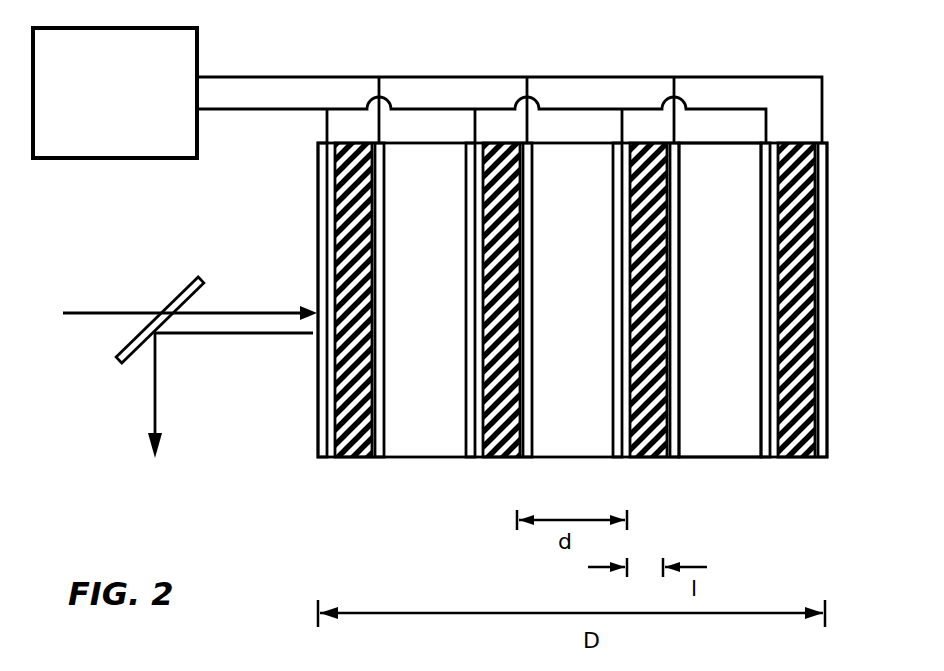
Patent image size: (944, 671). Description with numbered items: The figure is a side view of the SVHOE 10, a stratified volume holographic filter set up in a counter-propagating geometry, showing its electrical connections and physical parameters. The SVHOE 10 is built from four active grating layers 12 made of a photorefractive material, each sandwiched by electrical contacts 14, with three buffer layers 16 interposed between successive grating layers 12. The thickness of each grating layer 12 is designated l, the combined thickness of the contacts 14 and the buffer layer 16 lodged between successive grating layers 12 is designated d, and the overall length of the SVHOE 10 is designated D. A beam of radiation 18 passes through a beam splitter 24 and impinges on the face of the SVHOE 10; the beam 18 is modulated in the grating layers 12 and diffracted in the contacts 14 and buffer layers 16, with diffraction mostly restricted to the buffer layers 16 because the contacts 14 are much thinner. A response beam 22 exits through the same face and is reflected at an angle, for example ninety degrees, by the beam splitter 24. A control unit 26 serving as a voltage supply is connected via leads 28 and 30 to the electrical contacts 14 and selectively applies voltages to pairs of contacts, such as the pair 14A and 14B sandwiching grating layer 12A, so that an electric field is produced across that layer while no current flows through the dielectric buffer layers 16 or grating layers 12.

The SVHOE 10 is at (855, 279).
The grating layers 12 is at (790, 460).
The grating layer 12A is at (348, 457).
The electrical contacts 14 is at (667, 460).
The electrical contact 14A is at (330, 457).
The electrical contact 14B is at (378, 458).
The buffer layers 16 is at (718, 460).
The beam of radiation 18 is at (267, 311).
The response beam 22 is at (157, 392).
The beam splitter 24 is at (182, 284).
The control unit 26 is at (128, 141).
The lead 28 is at (822, 110).
The lead 30 is at (264, 108).